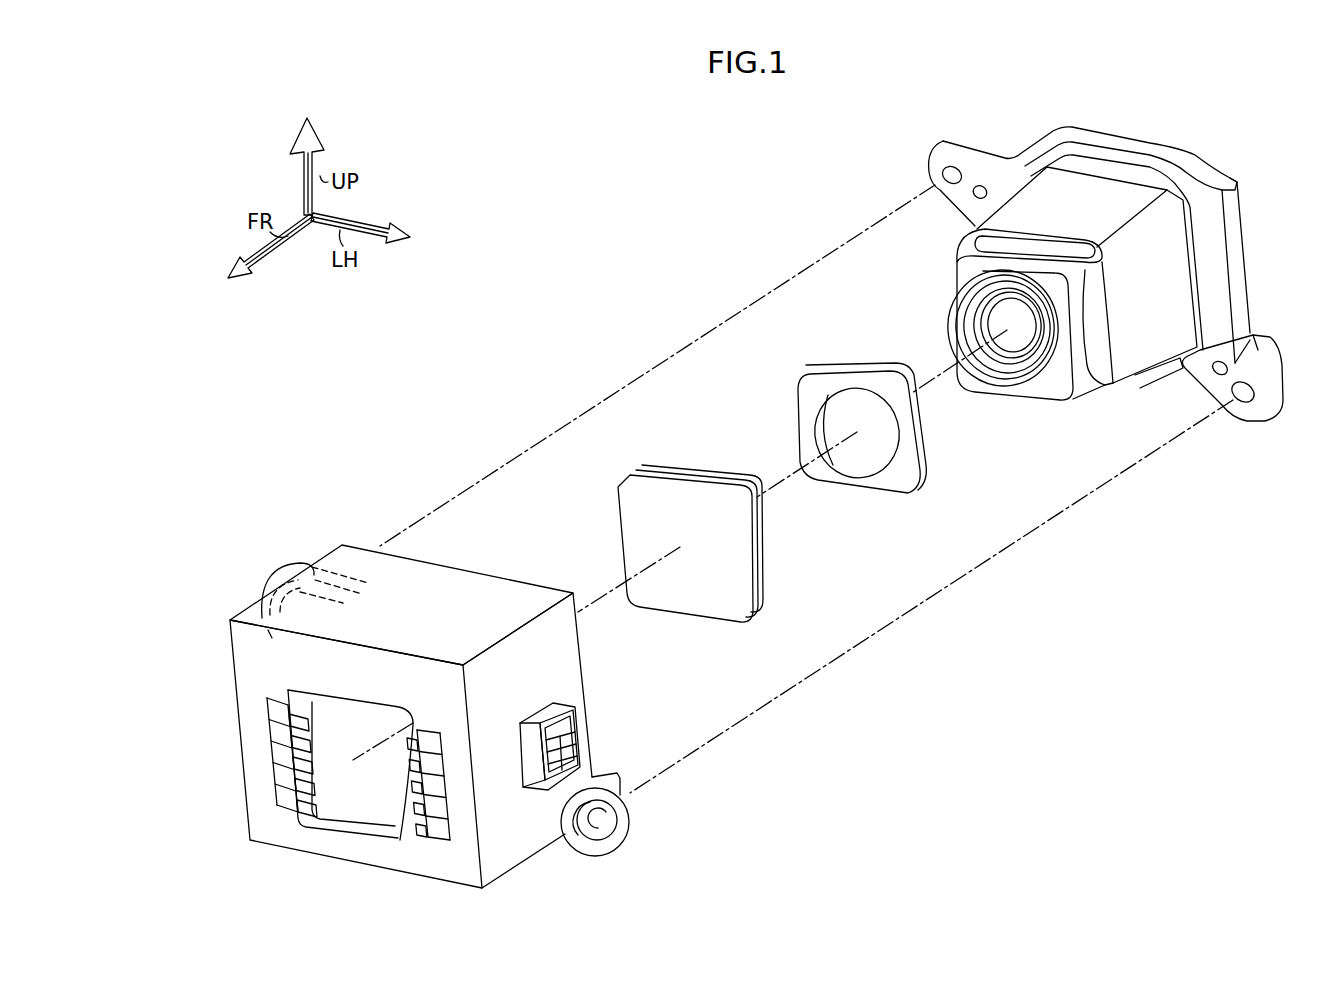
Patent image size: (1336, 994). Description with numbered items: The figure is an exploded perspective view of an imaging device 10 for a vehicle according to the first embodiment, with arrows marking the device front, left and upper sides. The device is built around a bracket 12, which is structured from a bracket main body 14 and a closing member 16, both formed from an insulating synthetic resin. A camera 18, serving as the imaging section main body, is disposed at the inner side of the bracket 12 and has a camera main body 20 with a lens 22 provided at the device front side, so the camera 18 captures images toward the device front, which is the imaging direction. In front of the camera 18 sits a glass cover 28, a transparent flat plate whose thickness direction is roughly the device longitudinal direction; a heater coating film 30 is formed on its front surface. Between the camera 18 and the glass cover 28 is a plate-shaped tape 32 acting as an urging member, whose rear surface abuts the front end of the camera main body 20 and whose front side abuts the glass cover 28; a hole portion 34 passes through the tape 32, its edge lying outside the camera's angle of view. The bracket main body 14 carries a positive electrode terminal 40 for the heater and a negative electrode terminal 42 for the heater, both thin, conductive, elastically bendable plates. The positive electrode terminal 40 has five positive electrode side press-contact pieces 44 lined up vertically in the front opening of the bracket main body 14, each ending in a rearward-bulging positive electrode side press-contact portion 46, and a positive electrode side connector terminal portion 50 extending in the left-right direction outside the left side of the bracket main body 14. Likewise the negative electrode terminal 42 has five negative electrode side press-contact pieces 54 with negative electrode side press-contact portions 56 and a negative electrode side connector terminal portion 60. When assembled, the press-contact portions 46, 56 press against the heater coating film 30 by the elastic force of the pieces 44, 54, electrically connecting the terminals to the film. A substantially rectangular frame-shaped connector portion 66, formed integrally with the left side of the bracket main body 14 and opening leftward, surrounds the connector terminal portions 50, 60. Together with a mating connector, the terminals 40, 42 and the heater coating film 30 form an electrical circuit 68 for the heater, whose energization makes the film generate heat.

The imaging device for a vehicle 10 is at (645, 258).
The bracket 12 is at (410, 723).
The bracket main body 14 is at (458, 592).
The closing member 16 is at (1207, 162).
The camera 18 is at (1050, 324).
The camera main body 20 is at (1126, 362).
The lens 22 is at (997, 322).
The glass cover 28 is at (715, 570).
The heater coating film 30 is at (712, 607).
The tape 32 is at (862, 430).
The hole portion 34 is at (816, 448).
The positive electrode terminal for the heater 40 is at (350, 765).
The negative electrode terminal for the heater 42 is at (326, 733).
The positive electrode side press-contact piece 44 is at (432, 816).
The positive electrode side press-contact portion 46 is at (409, 738).
The positive electrode side connector terminal portion 50 is at (562, 768).
The negative electrode side press-contact piece 54 is at (274, 757).
The negative electrode side press-contact portion 56 is at (308, 707).
The negative electrode side connector terminal portion 60 is at (573, 733).
The connector portion 66 is at (573, 729).
The electrical circuit for the heater 68 is at (307, 695).